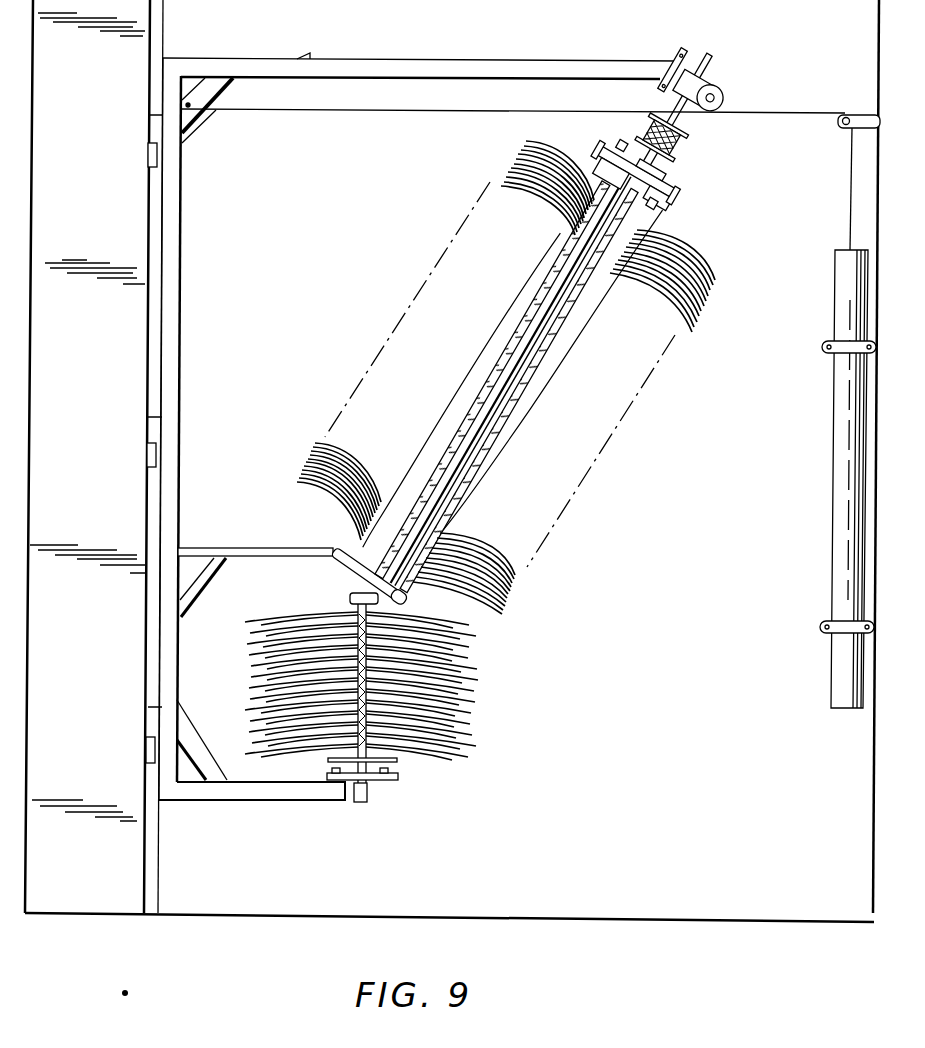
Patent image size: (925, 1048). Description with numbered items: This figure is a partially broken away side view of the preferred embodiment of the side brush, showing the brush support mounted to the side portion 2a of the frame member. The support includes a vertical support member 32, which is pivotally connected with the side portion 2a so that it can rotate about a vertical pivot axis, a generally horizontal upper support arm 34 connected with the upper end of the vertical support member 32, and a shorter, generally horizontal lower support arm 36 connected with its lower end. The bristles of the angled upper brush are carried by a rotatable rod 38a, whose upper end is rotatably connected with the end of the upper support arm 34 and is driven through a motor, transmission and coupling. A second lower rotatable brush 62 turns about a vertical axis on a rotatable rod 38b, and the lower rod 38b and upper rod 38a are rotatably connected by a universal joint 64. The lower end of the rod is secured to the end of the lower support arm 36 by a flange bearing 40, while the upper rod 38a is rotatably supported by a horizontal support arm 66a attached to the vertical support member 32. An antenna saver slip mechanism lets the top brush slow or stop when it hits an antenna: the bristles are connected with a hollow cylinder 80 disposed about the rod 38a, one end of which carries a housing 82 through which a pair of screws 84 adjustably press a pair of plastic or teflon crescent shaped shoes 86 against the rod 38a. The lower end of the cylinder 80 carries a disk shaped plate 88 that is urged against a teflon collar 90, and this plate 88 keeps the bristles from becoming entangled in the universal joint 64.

The side portion 2a is at (95, 384).
The vertical support member 32 is at (182, 243).
The upper support arm 34 is at (450, 60).
The lower support arm 36 is at (265, 802).
The rotatable rod 38a is at (509, 378).
The rotatable rod 38b is at (366, 803).
The flange bearing 40 is at (386, 788).
The lower rotatable brush 62 is at (478, 670).
The universal joint 64 is at (350, 601).
The horizontal support arm 66a is at (255, 546).
The hollow cylinder 80 is at (632, 180).
The housing 82 is at (653, 185).
The screws 84 is at (635, 172).
The crescent shaped shoes 86 is at (636, 174).
The disk shaped plate 88 is at (337, 546).
The teflon collar 90 is at (396, 603).